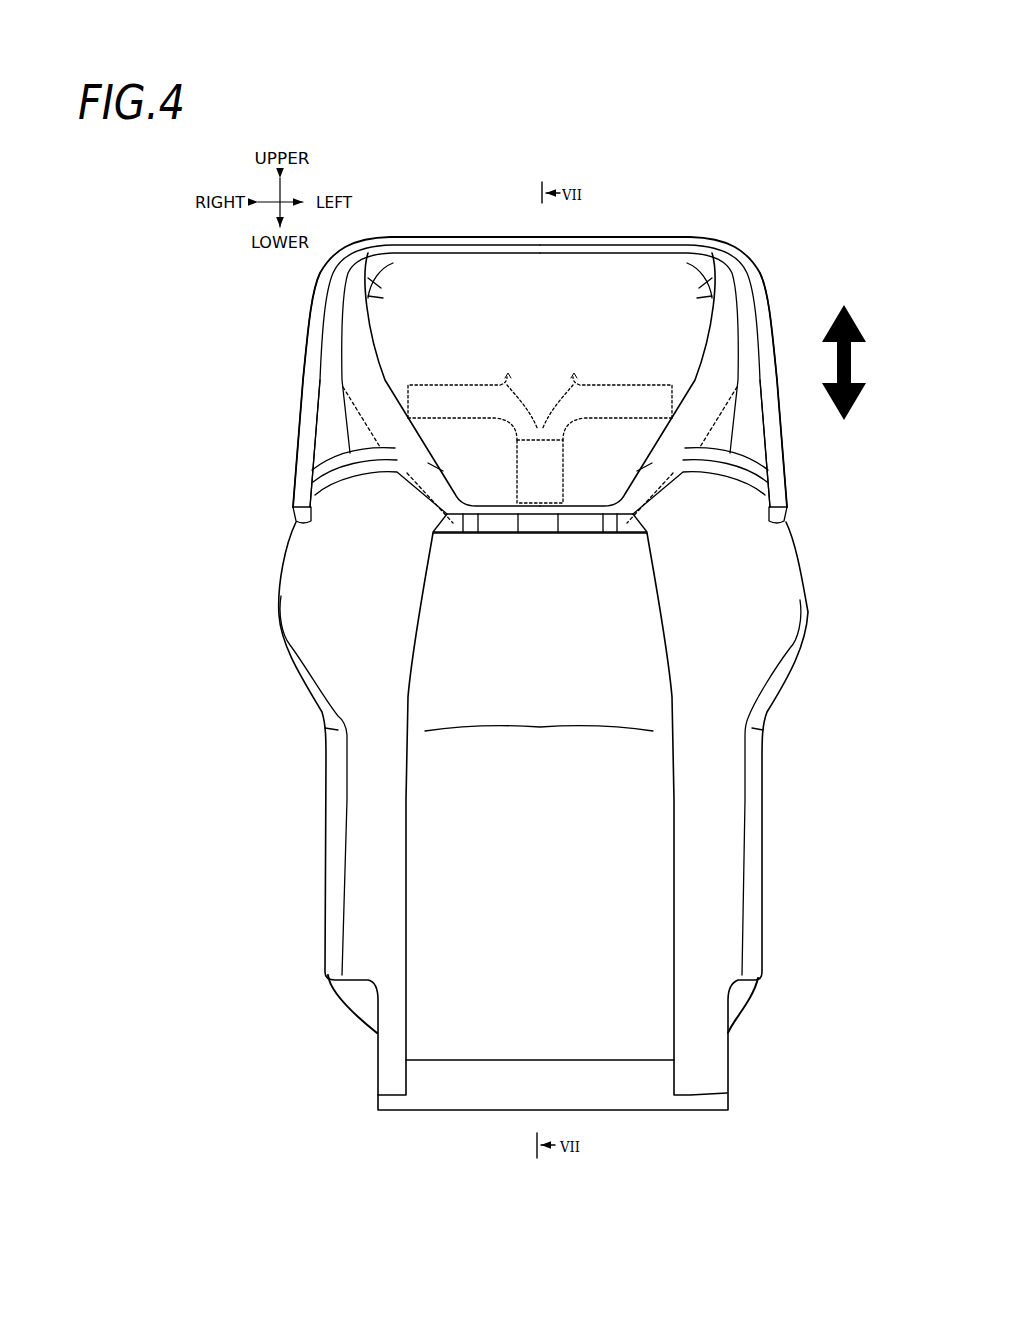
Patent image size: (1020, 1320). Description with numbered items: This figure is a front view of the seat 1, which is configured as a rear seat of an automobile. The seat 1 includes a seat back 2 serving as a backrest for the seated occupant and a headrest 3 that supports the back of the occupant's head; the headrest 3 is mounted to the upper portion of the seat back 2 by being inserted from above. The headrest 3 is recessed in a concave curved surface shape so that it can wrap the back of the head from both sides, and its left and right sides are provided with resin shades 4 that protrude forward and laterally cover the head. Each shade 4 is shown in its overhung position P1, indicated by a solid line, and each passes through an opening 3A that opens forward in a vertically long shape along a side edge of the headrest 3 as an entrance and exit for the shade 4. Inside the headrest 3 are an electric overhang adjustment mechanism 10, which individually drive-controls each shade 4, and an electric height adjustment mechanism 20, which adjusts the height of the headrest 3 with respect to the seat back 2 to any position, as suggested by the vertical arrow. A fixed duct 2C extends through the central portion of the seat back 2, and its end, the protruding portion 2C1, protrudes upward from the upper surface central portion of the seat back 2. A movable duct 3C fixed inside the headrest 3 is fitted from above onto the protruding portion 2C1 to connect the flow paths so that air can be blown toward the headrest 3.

The seat 1 is at (793, 200).
The seat back 2 is at (778, 572).
The fixed duct 2C is at (546, 521).
The protruding portion 2C1 is at (540, 557).
The headrest 3 is at (542, 359).
The overhang adjustment mechanism 10 is at (542, 359).
The height adjustment mechanism 20 is at (607, 277).
The opening 3A is at (340, 318).
The movable duct 3C is at (555, 481).
The shade 4 is at (542, 443).
The overhung position P1 is at (306, 381).